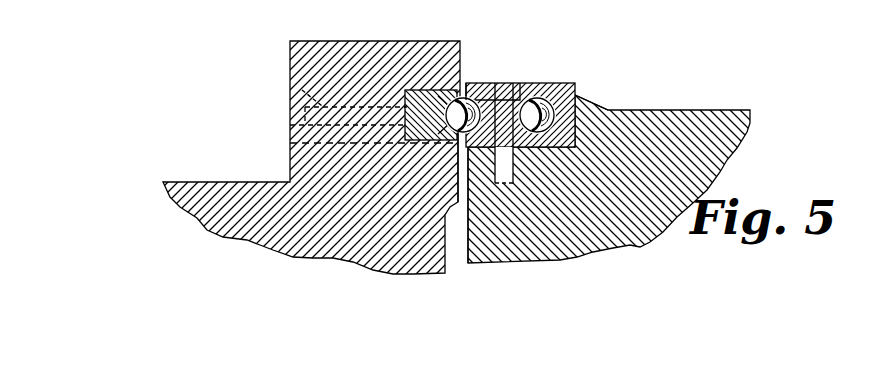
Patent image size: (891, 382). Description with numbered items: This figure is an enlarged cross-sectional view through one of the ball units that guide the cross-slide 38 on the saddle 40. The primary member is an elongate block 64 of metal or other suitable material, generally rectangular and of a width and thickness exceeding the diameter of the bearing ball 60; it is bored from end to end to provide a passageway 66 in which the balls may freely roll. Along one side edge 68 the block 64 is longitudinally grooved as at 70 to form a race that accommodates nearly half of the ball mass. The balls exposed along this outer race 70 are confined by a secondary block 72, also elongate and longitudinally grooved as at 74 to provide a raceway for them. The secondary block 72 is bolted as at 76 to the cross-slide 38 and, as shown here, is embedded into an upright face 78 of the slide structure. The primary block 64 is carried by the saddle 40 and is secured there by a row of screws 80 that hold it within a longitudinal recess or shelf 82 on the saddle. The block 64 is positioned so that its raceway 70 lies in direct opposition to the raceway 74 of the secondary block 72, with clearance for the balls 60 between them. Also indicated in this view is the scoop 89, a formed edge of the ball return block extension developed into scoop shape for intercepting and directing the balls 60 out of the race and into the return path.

The cross-slide 38 is at (244, 238).
The saddle 40 is at (630, 246).
The bearing ball 60 is at (456, 98).
The elongate block 64 is at (524, 90).
The passageway 66 is at (556, 108).
The side edge 68 is at (470, 83).
The groove 70 is at (498, 93).
The secondary block 72 is at (413, 90).
The groove 74 is at (440, 97).
The bolt 76 is at (300, 88).
The upright face 78 is at (463, 178).
The screws 80 is at (515, 84).
The recess or shelf 82 is at (608, 110).
The scoop 89 is at (290, 143).